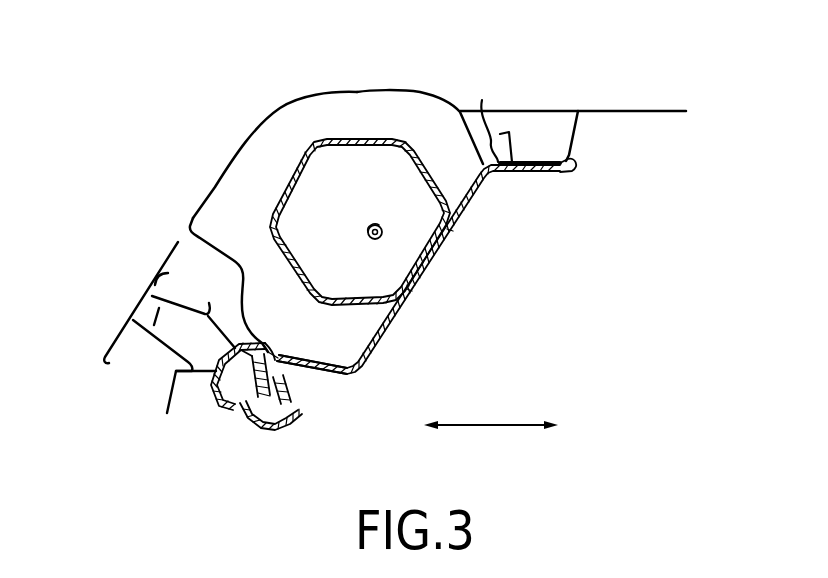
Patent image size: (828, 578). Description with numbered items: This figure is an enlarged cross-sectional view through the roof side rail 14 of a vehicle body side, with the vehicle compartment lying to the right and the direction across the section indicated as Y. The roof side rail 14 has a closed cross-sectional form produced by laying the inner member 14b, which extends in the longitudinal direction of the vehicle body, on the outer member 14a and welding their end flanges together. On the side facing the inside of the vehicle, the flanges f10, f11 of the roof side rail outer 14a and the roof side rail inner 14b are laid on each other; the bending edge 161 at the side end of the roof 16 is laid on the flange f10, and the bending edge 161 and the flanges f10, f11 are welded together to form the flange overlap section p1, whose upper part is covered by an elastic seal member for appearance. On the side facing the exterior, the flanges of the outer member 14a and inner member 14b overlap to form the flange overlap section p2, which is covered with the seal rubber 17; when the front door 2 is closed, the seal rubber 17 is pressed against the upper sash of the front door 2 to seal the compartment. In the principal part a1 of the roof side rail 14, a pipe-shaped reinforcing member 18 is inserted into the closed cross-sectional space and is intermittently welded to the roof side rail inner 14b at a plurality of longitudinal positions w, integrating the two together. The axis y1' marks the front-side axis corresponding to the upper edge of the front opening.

The front door 2 is at (110, 337).
The roof side rail 14 is at (387, 209).
The outer member of roof side rail 14a is at (250, 138).
The inner member of roof side rail 14b is at (366, 352).
The roof 16 is at (573, 105).
The bending edge 161 is at (571, 140).
The seal rubber 17 is at (271, 428).
The pipe-shaped reinforcing member 18 is at (388, 122).
The flange f10 is at (487, 115).
The flange f11 is at (528, 171).
The flange overlap section p1 is at (566, 194).
The flange overlap section p2 is at (284, 338).
The welding positions w is at (453, 229).
The principal part of roof side rail a1 is at (452, 278).
The axis y1' is at (343, 233).
The Y direction Y is at (507, 425).